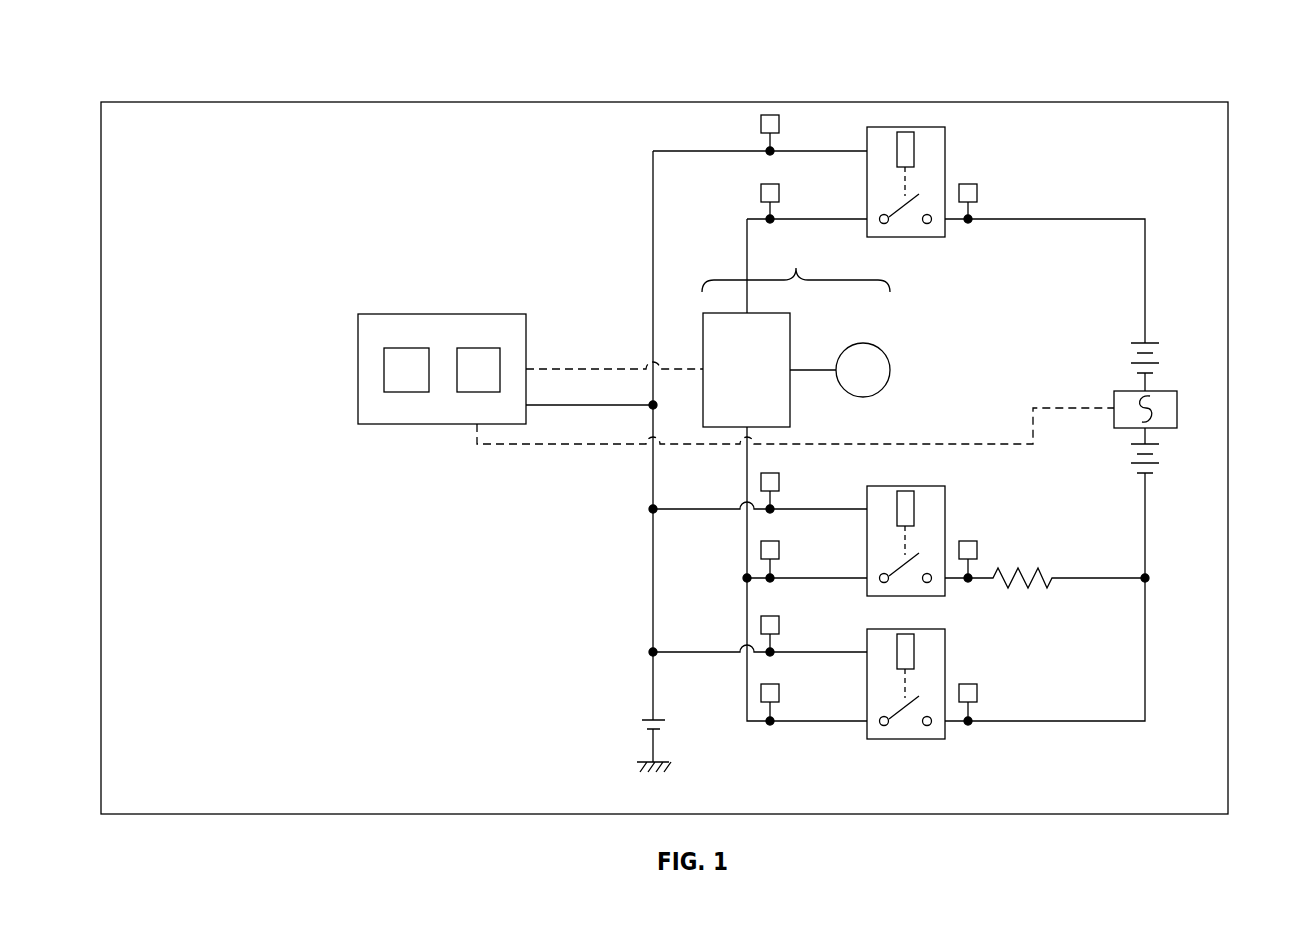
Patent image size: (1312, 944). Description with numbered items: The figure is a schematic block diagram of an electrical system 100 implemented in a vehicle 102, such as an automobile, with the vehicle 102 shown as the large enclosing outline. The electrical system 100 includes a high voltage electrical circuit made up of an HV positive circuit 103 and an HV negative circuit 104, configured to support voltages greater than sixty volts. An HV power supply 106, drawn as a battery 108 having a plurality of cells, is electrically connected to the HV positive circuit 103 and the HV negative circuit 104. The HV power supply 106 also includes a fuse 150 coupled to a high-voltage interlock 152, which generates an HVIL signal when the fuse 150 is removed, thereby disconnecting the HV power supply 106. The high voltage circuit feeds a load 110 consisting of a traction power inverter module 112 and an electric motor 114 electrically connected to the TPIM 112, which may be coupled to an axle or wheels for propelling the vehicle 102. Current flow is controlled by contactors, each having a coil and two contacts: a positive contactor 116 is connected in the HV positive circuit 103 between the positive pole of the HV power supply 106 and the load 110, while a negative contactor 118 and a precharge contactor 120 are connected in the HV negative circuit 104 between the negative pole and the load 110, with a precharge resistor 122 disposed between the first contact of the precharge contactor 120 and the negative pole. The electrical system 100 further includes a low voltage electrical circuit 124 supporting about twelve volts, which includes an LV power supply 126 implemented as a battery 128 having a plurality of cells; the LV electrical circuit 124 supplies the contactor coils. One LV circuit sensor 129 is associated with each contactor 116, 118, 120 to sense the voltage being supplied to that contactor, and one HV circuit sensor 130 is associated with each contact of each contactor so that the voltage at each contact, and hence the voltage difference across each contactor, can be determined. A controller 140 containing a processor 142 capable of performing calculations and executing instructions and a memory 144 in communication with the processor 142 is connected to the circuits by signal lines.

The electrical system 100 is at (1208, 67).
The vehicle 102 is at (1047, 101).
The HV positive circuit 103 is at (1125, 211).
The HV negative circuit 104 is at (1039, 736).
The HV power supply 106 is at (1172, 404).
The battery 108 is at (1152, 343).
The load 110 is at (815, 331).
The traction power inverter module 112 is at (760, 313).
The electric motor 114 is at (862, 343).
The positive contactor 116 is at (905, 127).
The negative contactor 118 is at (945, 652).
The precharge contactor 120 is at (945, 509).
The precharge resistor 122 is at (1042, 585).
The LV electrical circuit 124 is at (639, 604).
The LV power supply 126 is at (646, 736).
The battery 128 is at (650, 720).
The LV circuit sensor 129 is at (780, 125).
The HV circuit sensor 130 is at (780, 193).
The controller 140 is at (378, 314).
The processor 142 is at (480, 348).
The memory 144 is at (408, 348).
The fuse 150 is at (1114, 398).
The high-voltage interlock 152 is at (1128, 391).